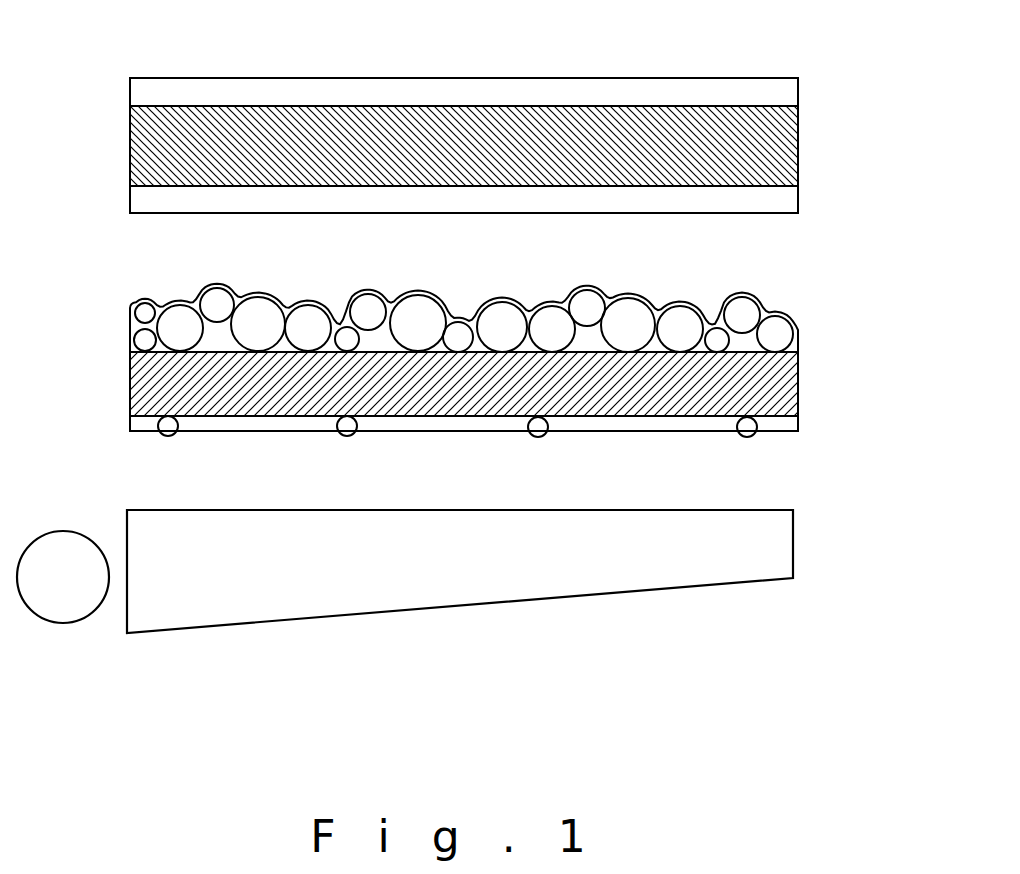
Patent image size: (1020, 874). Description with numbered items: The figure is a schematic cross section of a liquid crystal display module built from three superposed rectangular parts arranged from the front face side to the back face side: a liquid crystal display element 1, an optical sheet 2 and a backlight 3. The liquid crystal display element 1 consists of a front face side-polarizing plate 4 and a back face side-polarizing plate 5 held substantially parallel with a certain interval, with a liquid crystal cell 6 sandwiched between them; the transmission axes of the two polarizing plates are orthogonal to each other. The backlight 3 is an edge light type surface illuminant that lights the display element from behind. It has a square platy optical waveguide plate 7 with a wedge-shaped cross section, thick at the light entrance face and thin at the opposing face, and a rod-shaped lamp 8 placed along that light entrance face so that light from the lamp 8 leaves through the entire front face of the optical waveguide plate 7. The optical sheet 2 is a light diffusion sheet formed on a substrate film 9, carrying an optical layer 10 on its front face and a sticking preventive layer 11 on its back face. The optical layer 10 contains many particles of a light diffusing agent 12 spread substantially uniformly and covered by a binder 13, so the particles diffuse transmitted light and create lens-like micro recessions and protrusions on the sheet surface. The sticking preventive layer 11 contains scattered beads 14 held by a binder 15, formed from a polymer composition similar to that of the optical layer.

The liquid crystal display element 1 is at (111, 99).
The optical sheet 2 is at (108, 319).
The backlight 3 is at (96, 512).
The front face side-polarizing plate 4 is at (798, 92).
The back face side-polarizing plate 5 is at (798, 200).
The liquid crystal cell 6 is at (798, 143).
The optical waveguide plate 7 is at (794, 547).
The lamp 8 is at (63, 588).
The substrate film 9 is at (798, 385).
The optical layer 10 is at (798, 327).
The sticking preventive layer 11 is at (798, 422).
The light diffusing agent 12 is at (418, 323).
The binder 13 is at (588, 341).
The beads 14 is at (538, 432).
The binder 15 is at (418, 423).